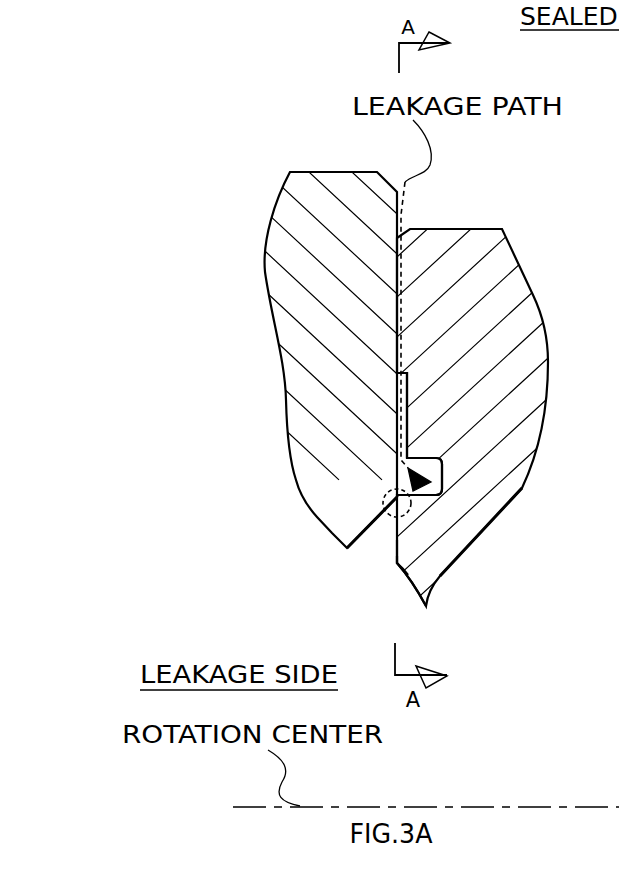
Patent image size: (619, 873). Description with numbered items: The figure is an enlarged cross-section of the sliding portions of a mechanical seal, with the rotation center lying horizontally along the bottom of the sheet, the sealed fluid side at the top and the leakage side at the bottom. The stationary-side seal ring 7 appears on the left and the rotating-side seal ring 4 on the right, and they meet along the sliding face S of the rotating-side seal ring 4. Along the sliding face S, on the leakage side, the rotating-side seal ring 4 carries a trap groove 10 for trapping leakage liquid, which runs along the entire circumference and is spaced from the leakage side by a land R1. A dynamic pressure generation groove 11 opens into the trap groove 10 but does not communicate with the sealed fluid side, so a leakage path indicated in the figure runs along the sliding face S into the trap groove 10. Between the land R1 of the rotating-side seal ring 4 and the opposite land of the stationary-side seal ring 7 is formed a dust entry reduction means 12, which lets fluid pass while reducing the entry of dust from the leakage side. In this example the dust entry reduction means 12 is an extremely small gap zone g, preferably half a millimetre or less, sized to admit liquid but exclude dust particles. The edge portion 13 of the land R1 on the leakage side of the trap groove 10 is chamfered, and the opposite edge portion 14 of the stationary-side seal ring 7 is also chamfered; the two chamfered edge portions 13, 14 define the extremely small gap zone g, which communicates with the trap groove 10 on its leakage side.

The stationary-side seal ring 7 is at (315, 172).
The rotating-side seal ring 4 is at (490, 229).
The sliding face S is at (618, 216).
The dynamic pressure generation groove 11 is at (407, 402).
The trap groove 10 is at (443, 466).
The edge portion 13 is at (407, 497).
The dust entry reduction means 12 is at (385, 502).
The edge portion 14 is at (393, 557).
The extremely small gap zone g is at (392, 507).
The land R1 is at (405, 562).